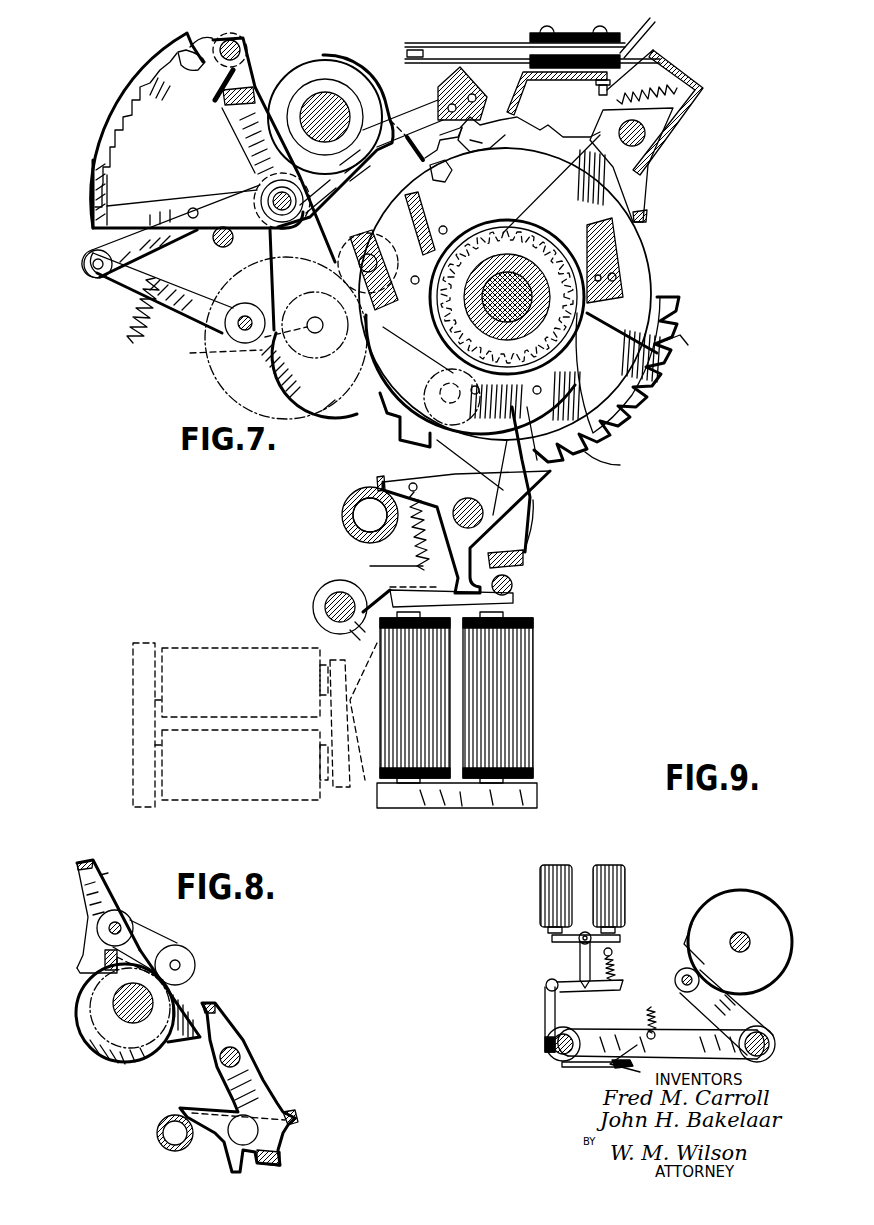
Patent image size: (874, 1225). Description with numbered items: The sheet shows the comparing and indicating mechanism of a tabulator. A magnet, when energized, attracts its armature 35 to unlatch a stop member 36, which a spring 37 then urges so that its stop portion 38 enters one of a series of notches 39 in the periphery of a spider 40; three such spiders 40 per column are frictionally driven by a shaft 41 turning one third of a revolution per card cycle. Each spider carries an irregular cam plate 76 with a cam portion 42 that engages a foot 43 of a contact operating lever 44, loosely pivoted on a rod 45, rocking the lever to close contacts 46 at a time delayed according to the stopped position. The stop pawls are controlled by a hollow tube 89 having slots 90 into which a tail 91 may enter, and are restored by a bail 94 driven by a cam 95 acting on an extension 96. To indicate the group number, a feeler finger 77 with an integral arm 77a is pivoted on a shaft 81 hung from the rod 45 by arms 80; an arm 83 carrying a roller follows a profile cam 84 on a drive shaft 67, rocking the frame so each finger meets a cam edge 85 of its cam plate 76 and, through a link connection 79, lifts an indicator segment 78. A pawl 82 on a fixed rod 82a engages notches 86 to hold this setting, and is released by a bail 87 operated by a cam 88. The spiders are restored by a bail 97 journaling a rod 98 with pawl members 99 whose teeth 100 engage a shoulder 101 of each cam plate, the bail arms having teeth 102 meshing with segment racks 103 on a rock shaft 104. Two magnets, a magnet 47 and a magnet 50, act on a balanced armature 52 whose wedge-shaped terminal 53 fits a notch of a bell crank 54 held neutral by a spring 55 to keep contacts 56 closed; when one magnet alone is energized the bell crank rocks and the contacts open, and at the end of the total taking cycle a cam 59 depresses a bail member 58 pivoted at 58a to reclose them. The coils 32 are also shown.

In FIG. 7, the coils 32 is at (507, 697).
In FIG. 7, the armature 35 is at (513, 598).
In FIG. 7, the stop member 36 is at (437, 487).
In FIG. 8, the stop member 36 is at (250, 1127).
In FIG. 7, the spring 37 is at (423, 557).
In FIG. 7, the stop portion 38 is at (530, 485).
In FIG. 8, the stop portion 38 is at (298, 1117).
In FIG. 7, the notches 39 is at (600, 453).
In FIG. 7, the spider 40 is at (667, 390).
In FIG. 7, the shaft 41 is at (508, 262).
In FIG. 7, the cam portion 42 is at (713, 355).
In FIG. 7, the foot 43 is at (503, 190).
In FIG. 7, the contact operating lever 44 is at (410, 108).
In FIG. 7, the rod 45 is at (273, 195).
In FIG. 8, the rod 45 is at (122, 928).
In FIG. 7, the contacts 46 is at (420, 52).
In FIG. 9, the magnet 47 is at (552, 900).
In FIG. 9, the magnet 50 is at (598, 878).
In FIG. 9, the balanced armature 52 is at (570, 940).
In FIG. 9, the wedge-shaped terminal 53 is at (580, 977).
In FIG. 9, the bell crank 54 is at (560, 980).
In FIG. 9, the spring 55 is at (613, 967).
In FIG. 9, the contacts 56 is at (580, 1069).
In FIG. 9, the bail member 58 is at (560, 1055).
In FIG. 9, the pivot 58a is at (763, 1060).
In FIG. 9, the cam 59 is at (762, 965).
In FIG. 7, the shaft 67 is at (315, 300).
In FIG. 8, the shaft 67 is at (142, 1001).
In FIG. 7, the cam plate 76 is at (577, 492).
In FIG. 7, the feeler finger 77 is at (323, 410).
In FIG. 7, the integral arm 77a is at (117, 277).
In FIG. 7, the indicator segment 78 is at (118, 107).
In FIG. 7, the link connection 79 is at (153, 243).
In FIG. 7, the arms 80 is at (250, 270).
In FIG. 7, the shaft 81 is at (240, 330).
In FIG. 7, the pawl 82 is at (181, 60).
In FIG. 7, the fixed rod 82a is at (242, 48).
In FIG. 7, the arm 83 is at (372, 192).
In FIG. 8, the arm 83 is at (157, 938).
In FIG. 7, the profile cam 84 is at (223, 387).
In FIG. 8, the profile cam 84 is at (78, 1020).
In FIG. 7, the cam edge 85 is at (650, 257).
In FIG. 7, the notches 86 is at (136, 130).
In FIG. 7, the bail 87 is at (250, 86).
In FIG. 8, the bail 87 is at (92, 857).
In FIG. 8, the cam 88 is at (108, 958).
In FIG. 7, the hollow tube 89 is at (342, 518).
In FIG. 8, the hollow tube 89 is at (160, 1123).
In FIG. 7, the slots 90 is at (362, 503).
In FIG. 7, the tail 91 is at (383, 476).
In FIG. 7, the bail 94 is at (525, 558).
In FIG. 8, the bail 94 is at (280, 1163).
In FIG. 8, the cam 95 is at (185, 1043).
In FIG. 8, the extension 96 is at (217, 1005).
In FIG. 7, the bail 97 is at (667, 72).
In FIG. 7, the rod 98 is at (643, 143).
In FIG. 7, the pawl members 99 is at (657, 123).
In FIG. 7, the teeth 100 is at (648, 213).
In FIG. 7, the shoulder 101 is at (717, 332).
In FIG. 7, the teeth 102 is at (618, 365).
In FIG. 7, the segment racks 103 is at (372, 307).
In FIG. 7, the rock shaft 104 is at (333, 100).